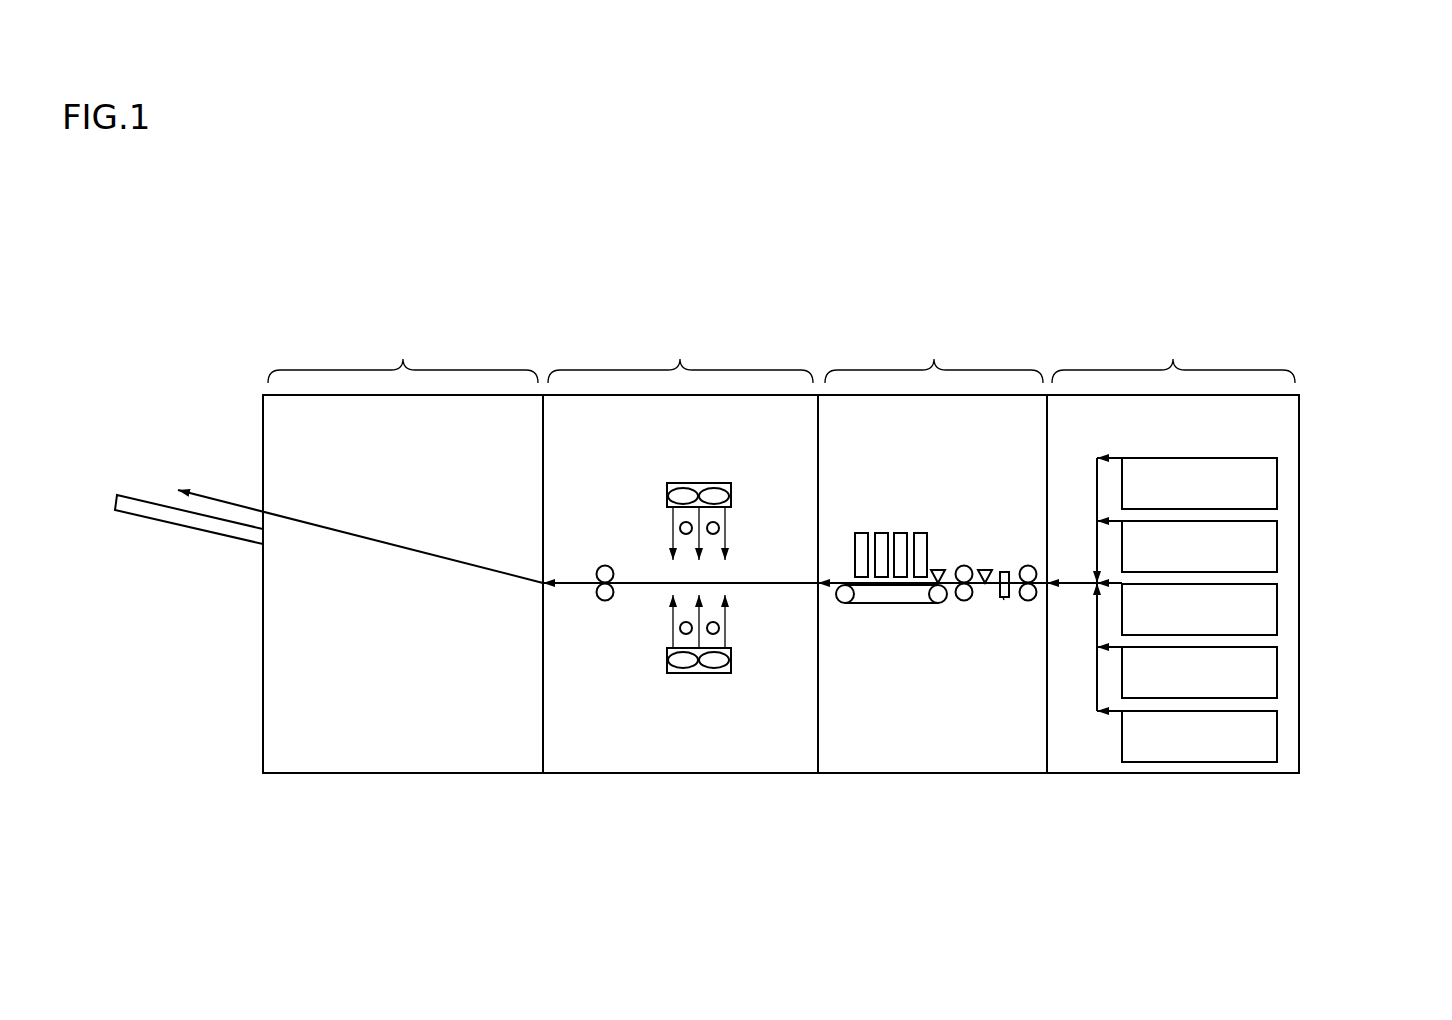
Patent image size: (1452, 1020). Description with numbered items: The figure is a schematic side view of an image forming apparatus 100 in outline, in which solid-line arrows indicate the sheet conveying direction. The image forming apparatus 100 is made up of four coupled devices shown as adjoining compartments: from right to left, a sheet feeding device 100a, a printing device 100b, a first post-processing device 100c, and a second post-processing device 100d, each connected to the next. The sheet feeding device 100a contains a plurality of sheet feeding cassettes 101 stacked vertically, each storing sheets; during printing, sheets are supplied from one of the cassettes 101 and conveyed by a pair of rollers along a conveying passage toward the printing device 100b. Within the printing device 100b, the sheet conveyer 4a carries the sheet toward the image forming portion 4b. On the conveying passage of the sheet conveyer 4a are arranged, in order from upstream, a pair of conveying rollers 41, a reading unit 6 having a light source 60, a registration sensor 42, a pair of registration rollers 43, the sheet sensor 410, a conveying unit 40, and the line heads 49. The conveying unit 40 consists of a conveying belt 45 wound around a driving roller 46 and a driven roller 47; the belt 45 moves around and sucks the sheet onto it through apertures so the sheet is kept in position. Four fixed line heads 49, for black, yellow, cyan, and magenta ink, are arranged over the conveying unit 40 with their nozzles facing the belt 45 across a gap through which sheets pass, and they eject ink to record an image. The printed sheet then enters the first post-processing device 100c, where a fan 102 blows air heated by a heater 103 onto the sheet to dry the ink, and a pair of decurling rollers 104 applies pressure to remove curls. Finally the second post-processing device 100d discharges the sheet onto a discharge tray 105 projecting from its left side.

The image forming apparatus 100 is at (1310, 382).
The sheet feeding device 100a is at (1173, 357).
The printing device 100b is at (934, 357).
The first post-processing device 100c is at (680, 357).
The second post-processing device 100d is at (403, 357).
The sheet feeding cassette 101 is at (1267, 478).
The fan 102 is at (700, 488).
The heater 103 is at (719, 528).
The pair of decurling rollers 104 is at (605, 601).
The discharge tray 105 is at (146, 504).
The sheet conveyer 4a is at (1027, 556).
The image forming portion 4b is at (852, 528).
The conveying unit 40 is at (892, 651).
The pair of conveying rollers 41 is at (1028, 603).
The registration sensor 42 is at (983, 568).
The pair of registration rollers 43 is at (963, 565).
The conveying belt 45 is at (899, 607).
The driving roller 46 is at (938, 604).
The driven roller 47 is at (845, 604).
The line head 49 is at (921, 545).
The sheet sensor 410 is at (937, 568).
The light source 60 is at (1003, 570).
The reading unit 6 is at (1003, 598).